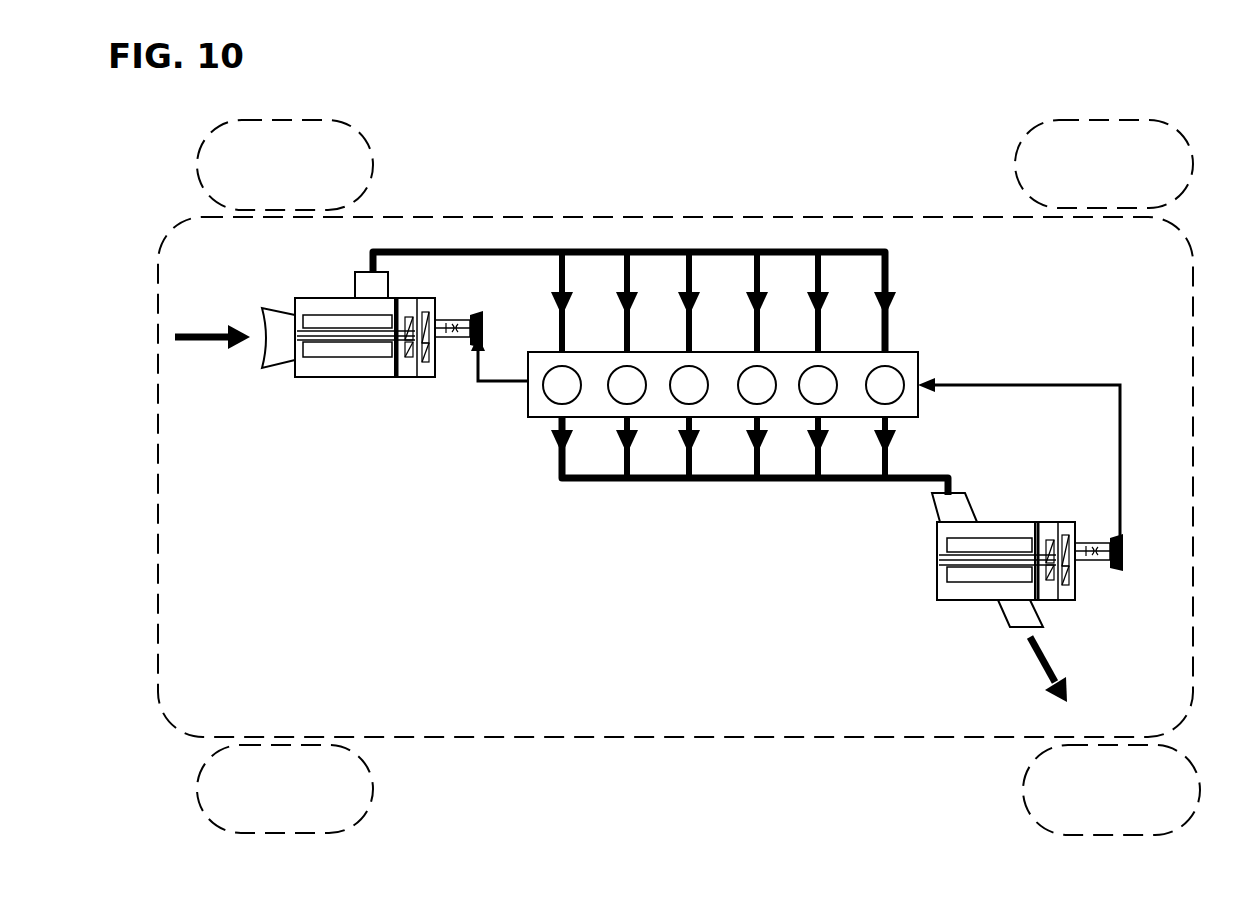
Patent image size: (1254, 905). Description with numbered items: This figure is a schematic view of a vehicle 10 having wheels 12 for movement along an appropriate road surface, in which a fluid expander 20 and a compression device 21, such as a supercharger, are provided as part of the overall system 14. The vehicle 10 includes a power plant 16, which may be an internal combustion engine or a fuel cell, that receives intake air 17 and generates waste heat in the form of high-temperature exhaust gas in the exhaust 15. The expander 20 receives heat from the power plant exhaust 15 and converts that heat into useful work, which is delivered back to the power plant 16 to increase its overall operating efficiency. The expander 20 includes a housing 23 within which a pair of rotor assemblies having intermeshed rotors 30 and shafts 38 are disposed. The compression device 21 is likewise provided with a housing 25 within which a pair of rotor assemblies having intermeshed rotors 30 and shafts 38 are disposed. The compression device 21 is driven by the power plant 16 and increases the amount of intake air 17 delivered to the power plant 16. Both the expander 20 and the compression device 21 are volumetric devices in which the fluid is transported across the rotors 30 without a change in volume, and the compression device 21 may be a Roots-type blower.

The vehicle 10 is at (845, 217).
The wheels 12 is at (1022, 148).
The engine system 14 is at (525, 152).
The exhaust 15 is at (837, 478).
The power plant 16 is at (918, 352).
The intake air 17 is at (538, 255).
The fluid expander 20 is at (979, 531).
The compression device 21 is at (351, 356).
The housing 23 is at (963, 602).
The housing 25 is at (388, 377).
The rotors 30 is at (353, 317).
The shafts 38 is at (303, 328).